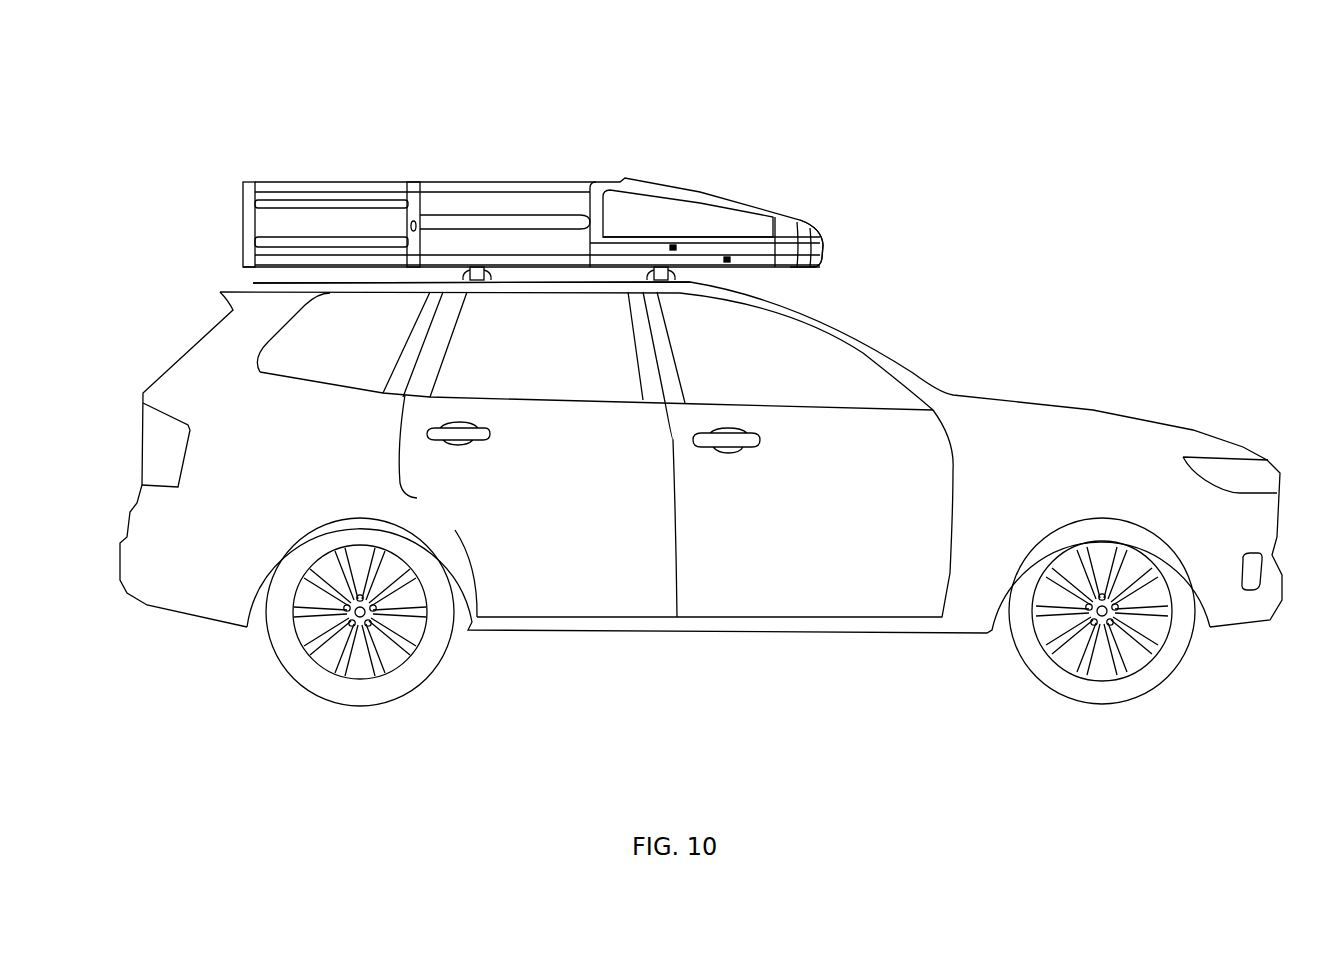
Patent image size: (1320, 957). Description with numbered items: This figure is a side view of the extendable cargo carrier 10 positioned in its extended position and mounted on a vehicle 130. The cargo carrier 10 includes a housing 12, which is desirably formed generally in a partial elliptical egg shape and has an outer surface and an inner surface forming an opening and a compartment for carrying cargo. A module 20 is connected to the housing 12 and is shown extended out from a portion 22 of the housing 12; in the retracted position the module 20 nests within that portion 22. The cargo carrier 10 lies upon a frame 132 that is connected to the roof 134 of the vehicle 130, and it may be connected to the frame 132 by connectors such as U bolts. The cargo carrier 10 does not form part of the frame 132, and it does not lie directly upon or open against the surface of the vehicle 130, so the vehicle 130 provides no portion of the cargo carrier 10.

The cargo carrier 10 is at (530, 117).
The housing 12 is at (822, 240).
The module 20 is at (322, 182).
The portion of the housing 22 is at (548, 190).
The vehicle 130 is at (1100, 407).
The frame 132 is at (480, 277).
The roof 134 is at (355, 287).